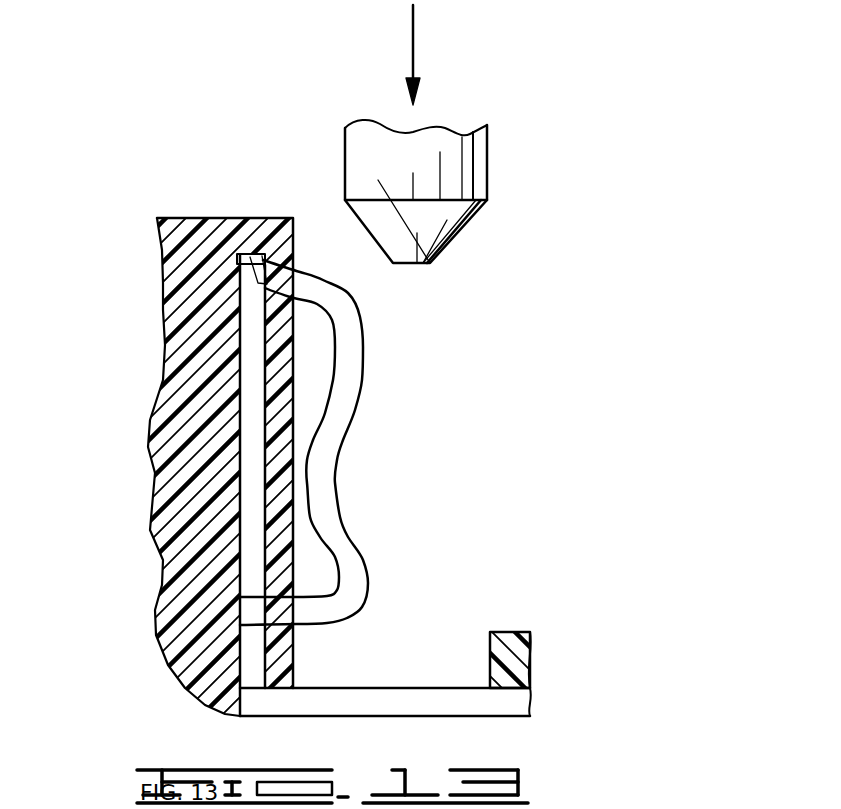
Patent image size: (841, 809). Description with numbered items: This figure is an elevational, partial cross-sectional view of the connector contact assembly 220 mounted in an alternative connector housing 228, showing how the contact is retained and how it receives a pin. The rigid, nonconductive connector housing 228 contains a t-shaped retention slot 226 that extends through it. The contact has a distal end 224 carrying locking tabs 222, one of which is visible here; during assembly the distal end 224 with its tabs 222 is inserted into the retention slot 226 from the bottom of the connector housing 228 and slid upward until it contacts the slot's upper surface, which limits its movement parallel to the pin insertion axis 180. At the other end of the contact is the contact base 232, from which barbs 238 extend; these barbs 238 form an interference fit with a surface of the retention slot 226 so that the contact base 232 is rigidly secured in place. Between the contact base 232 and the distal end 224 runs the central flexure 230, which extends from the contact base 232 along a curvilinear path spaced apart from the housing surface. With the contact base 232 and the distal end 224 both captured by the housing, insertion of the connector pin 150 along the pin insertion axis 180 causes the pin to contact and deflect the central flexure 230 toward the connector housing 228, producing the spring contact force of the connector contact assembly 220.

The connector pin 150 is at (430, 265).
The pin insertion axis 180 is at (414, 45).
The connector contact assembly 220 is at (145, 176).
The locking tabs 222 is at (250, 258).
The distal end 224 is at (277, 281).
The retention slot 226 is at (247, 428).
The connector housing 228 is at (175, 253).
The central flexure 230 is at (347, 388).
The contact base 232 is at (262, 704).
The barbs 238 is at (255, 638).